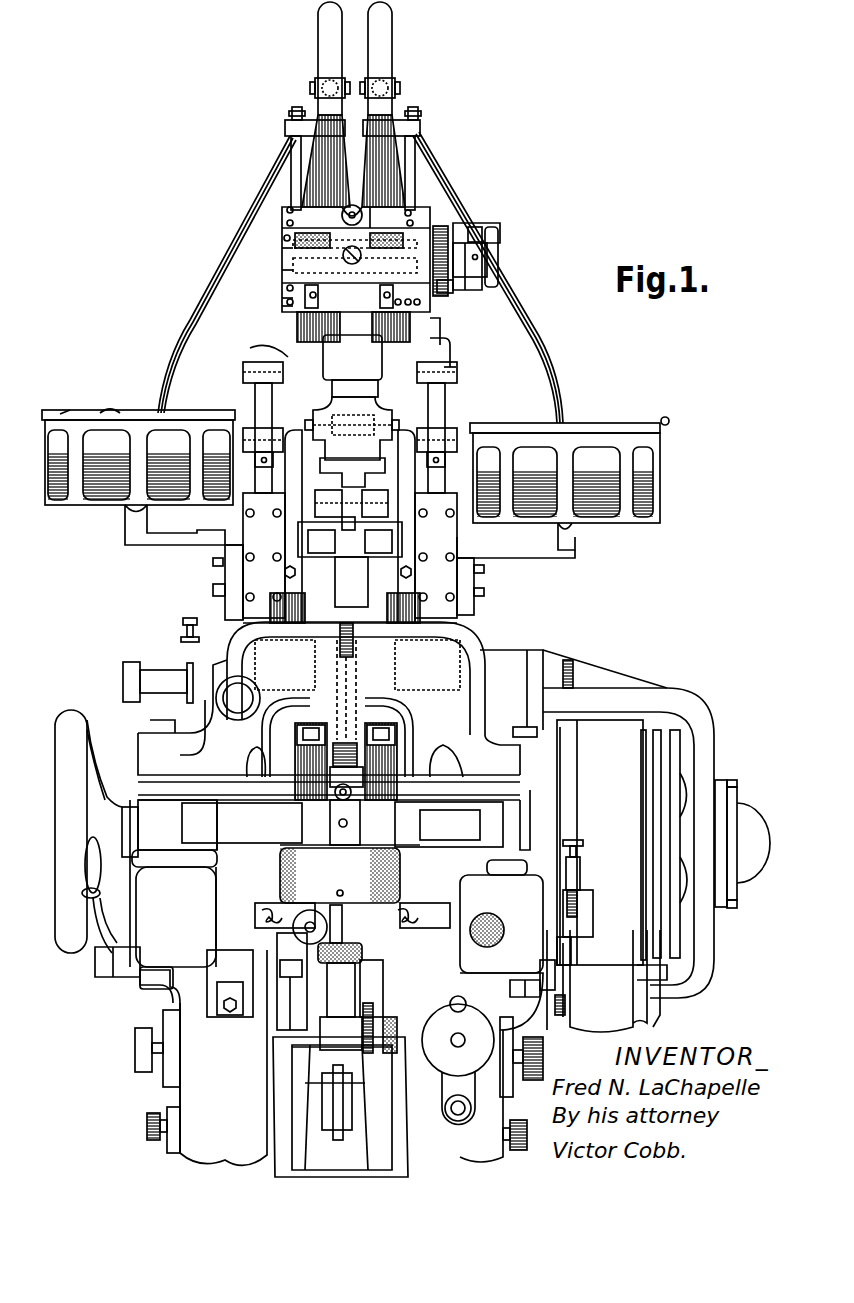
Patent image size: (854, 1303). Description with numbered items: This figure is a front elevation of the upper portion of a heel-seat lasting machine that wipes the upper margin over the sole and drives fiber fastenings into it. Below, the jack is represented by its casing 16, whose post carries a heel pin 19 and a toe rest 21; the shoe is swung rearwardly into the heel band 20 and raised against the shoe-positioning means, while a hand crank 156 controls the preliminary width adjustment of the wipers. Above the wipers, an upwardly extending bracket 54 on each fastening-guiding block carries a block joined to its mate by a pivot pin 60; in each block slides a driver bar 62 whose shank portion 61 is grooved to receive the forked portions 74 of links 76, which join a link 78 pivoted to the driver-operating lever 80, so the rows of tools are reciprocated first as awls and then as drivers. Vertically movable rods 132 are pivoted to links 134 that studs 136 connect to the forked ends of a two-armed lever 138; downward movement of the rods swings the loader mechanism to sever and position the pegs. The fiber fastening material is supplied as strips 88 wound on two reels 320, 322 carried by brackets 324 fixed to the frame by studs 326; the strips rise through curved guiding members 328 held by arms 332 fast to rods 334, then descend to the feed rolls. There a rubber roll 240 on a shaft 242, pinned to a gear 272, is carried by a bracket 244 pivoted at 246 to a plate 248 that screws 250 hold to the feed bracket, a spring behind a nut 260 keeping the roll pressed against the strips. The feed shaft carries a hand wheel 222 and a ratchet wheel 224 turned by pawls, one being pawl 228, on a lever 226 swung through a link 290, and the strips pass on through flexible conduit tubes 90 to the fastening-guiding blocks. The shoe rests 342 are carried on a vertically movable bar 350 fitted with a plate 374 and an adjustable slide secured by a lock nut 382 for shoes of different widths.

The casing 16 is at (348, 1150).
The heel pin or spindle 19 is at (365, 940).
The heel band 20 is at (440, 860).
The toe rest 21 is at (365, 960).
The bracket 54 is at (278, 737).
The pivot pin 60 is at (305, 790).
The shank portion 61 is at (368, 565).
The tool carrier or driver bar 62 is at (313, 730).
The forked portions 74 is at (330, 552).
The links 76 is at (325, 505).
The link 78 is at (372, 460).
The driver-operating lever 80 is at (358, 412).
The strip of fiber fastening material 88 is at (197, 282).
The flexible conduit tube 90 is at (433, 316).
The rods 132 is at (240, 637).
The link 134 is at (265, 405).
The studs 136 is at (250, 374).
The two-armed lever 138 is at (452, 345).
The hand crank 156 is at (510, 1060).
The hand wheel 222 is at (498, 237).
The ratchet wheel 224 is at (452, 290).
The lever 226 is at (470, 278).
The pawl 228 is at (466, 228).
The roll 240 is at (298, 233).
The shaft 242 is at (285, 252).
The bracket 244 is at (285, 273).
The pivot 246 is at (287, 300).
The plate 248 is at (290, 307).
The screws 250 is at (416, 305).
The nut 260 is at (372, 219).
The gear 272 is at (441, 236).
The link 290 is at (482, 230).
The reel 320 is at (82, 428).
The reel 322 is at (627, 440).
The brackets 324 is at (125, 540).
The studs 326 is at (213, 588).
The curved guiding members 328 is at (325, 23).
The arms 332 is at (290, 125).
The rods 334 is at (291, 155).
The shoe rest 342 is at (320, 847).
The bar 350 is at (371, 687).
The plate 374 is at (300, 815).
The lock nut 382 is at (380, 810).